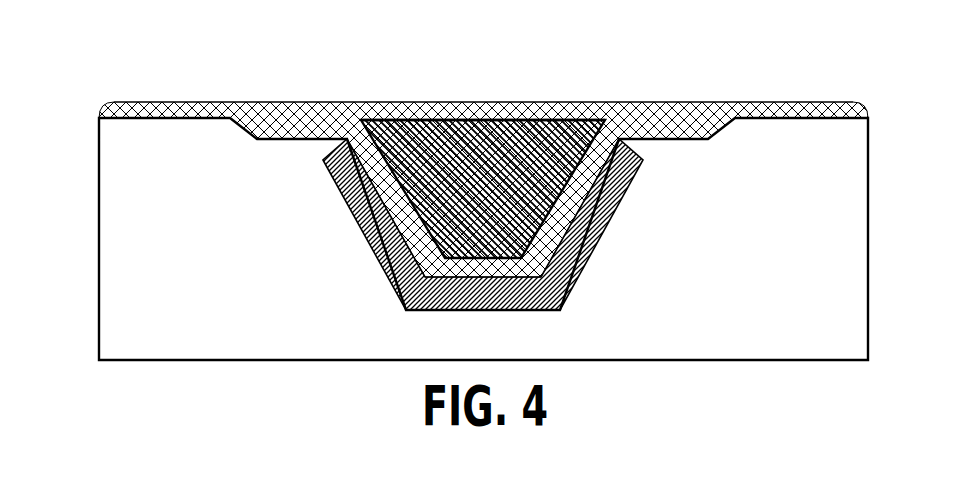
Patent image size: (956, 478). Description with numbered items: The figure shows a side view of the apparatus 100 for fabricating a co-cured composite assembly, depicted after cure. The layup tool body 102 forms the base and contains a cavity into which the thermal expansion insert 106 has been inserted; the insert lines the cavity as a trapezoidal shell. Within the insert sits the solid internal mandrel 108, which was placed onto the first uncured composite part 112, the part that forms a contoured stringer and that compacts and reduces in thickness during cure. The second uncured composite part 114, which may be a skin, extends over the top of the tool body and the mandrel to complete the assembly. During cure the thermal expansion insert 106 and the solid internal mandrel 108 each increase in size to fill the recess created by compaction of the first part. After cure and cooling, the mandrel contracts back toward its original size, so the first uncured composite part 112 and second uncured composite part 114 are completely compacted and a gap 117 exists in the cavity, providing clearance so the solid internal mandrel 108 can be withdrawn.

The apparatus 100 is at (447, 187).
The layup tool body 102 is at (99, 227).
The thermal expansion insert 106 is at (335, 159).
The solid internal mandrel 108 is at (450, 124).
The first uncured composite part 112 is at (251, 125).
The second uncured composite part 114 is at (153, 103).
The gap 117 is at (370, 119).